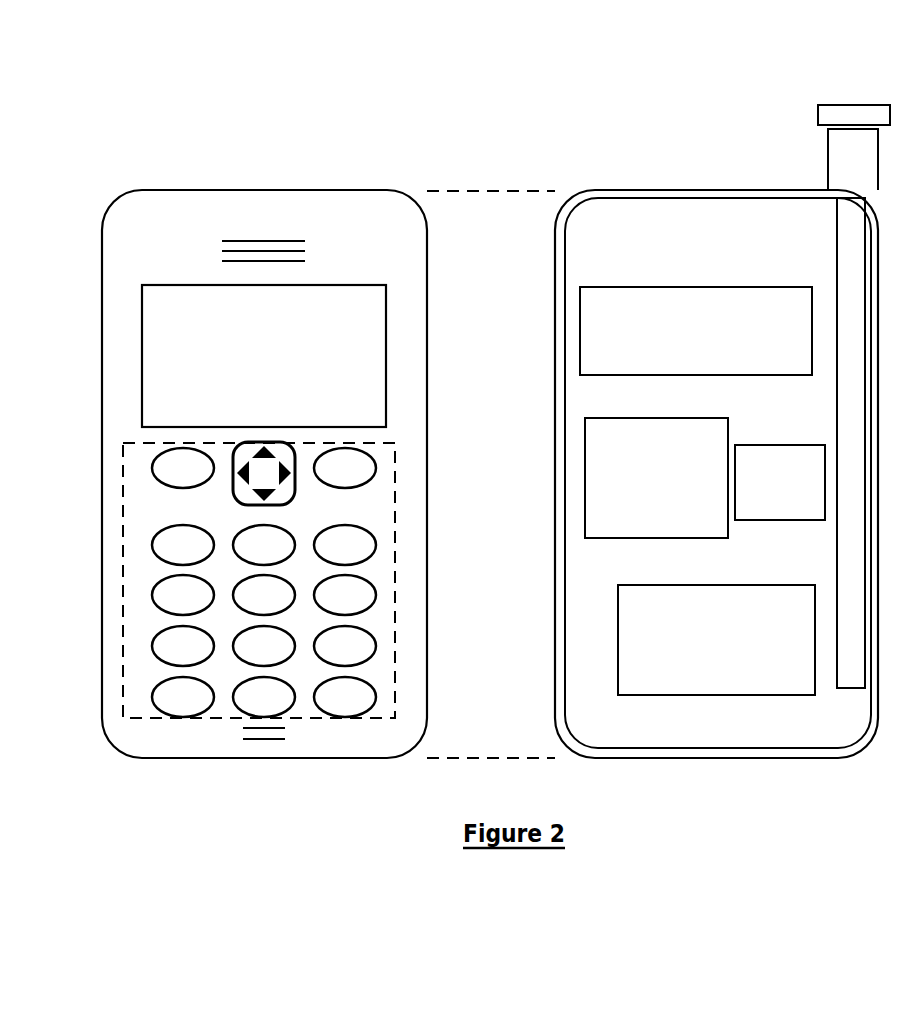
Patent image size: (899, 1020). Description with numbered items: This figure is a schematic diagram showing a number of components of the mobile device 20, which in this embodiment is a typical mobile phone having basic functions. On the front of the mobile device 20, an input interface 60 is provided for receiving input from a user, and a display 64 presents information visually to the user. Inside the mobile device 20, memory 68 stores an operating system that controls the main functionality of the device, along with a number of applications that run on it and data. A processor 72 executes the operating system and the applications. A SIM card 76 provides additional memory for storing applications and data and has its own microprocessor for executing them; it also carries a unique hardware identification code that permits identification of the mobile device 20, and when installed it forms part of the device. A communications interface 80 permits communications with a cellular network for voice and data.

The mobile device 20 is at (84, 186).
The display 64 is at (185, 370).
The input interface 60 is at (123, 576).
The memory 68 is at (686, 332).
The processor 72 is at (647, 500).
The SIM card 76 is at (770, 514).
The communications interface 80 is at (707, 672).